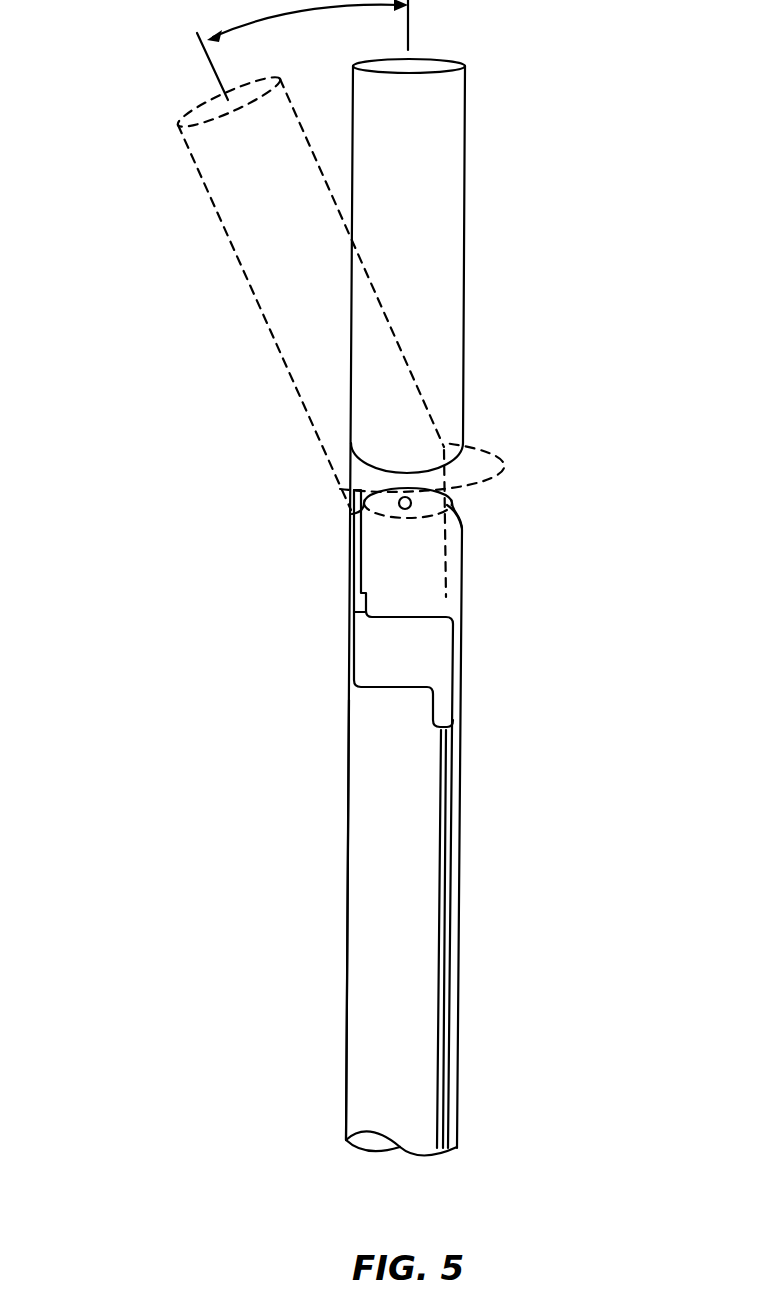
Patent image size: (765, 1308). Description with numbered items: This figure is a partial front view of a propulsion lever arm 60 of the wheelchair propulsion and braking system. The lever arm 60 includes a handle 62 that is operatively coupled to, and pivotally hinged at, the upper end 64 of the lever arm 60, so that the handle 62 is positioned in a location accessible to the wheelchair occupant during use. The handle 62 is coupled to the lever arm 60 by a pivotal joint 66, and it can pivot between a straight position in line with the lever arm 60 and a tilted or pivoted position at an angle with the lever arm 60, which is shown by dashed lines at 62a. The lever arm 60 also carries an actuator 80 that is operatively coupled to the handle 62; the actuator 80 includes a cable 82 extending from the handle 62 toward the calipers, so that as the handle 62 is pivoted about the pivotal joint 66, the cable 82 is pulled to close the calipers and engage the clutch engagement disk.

The lever arm 60 is at (380, 916).
The handle 62 is at (431, 154).
The tilted or pivoted position of the handle 62a is at (202, 182).
The upper end 64 is at (452, 590).
The pivotal joint 66 is at (400, 497).
The actuator 80 is at (447, 533).
The cable 82 is at (441, 672).